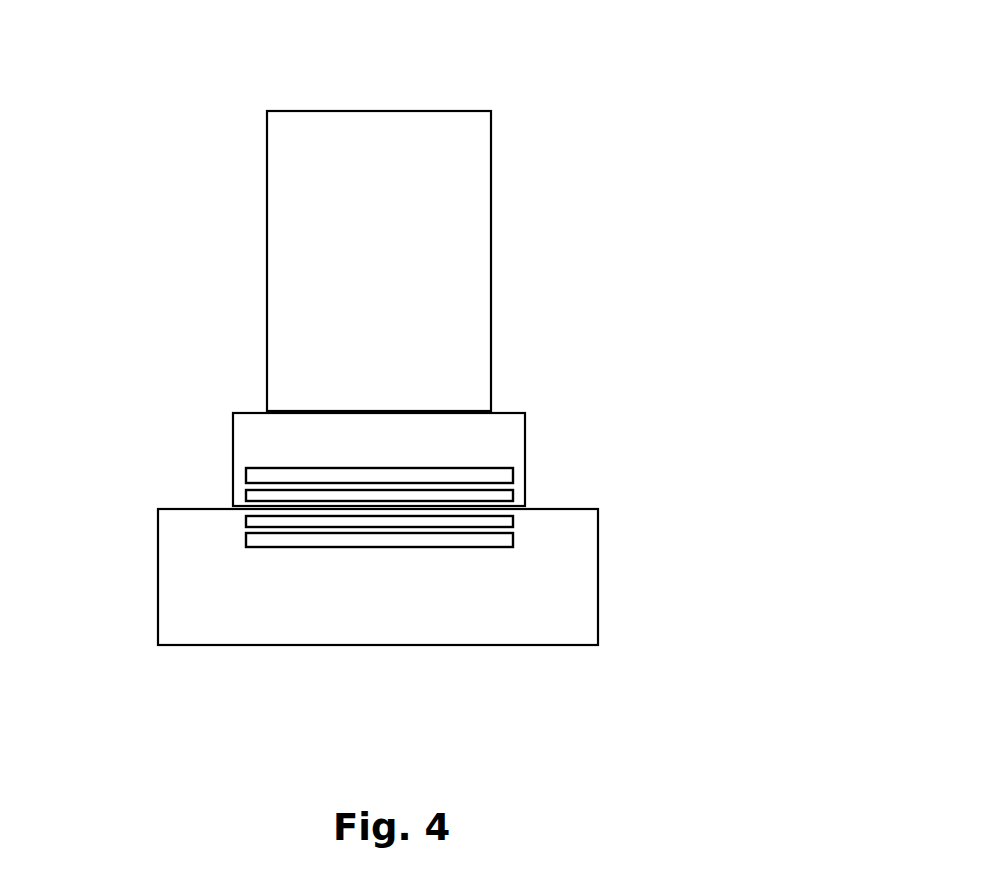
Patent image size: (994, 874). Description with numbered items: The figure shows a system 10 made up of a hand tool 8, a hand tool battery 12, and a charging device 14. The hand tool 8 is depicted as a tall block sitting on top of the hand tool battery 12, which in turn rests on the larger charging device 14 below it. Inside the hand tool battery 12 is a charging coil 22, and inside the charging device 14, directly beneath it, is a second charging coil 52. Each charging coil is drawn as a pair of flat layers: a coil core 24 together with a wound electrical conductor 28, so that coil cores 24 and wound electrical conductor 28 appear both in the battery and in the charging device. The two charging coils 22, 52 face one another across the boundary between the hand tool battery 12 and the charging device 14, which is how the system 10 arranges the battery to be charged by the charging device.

The system 10 is at (542, 87).
The hand tool 8 is at (457, 232).
The hand tool battery 12 is at (260, 437).
The charging device 14 is at (187, 582).
The charging coil 22 is at (540, 472).
The coil cores 24 is at (507, 478).
The wound electrical conductor 28 is at (493, 493).
The charging coil 52 is at (535, 536).